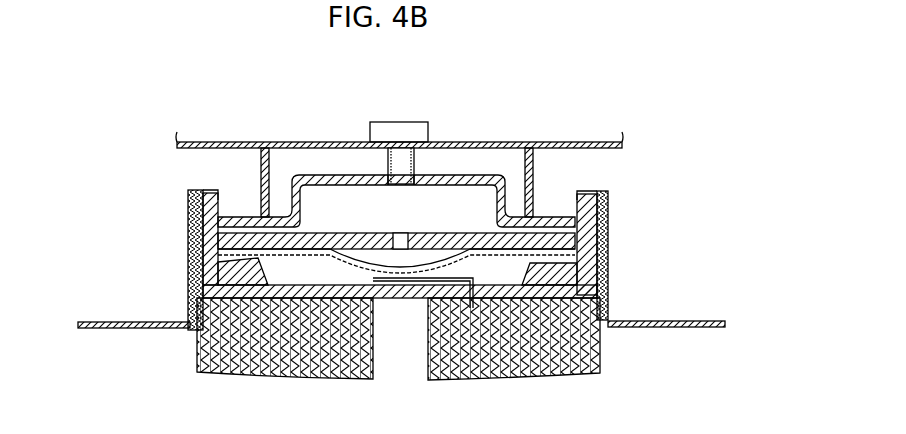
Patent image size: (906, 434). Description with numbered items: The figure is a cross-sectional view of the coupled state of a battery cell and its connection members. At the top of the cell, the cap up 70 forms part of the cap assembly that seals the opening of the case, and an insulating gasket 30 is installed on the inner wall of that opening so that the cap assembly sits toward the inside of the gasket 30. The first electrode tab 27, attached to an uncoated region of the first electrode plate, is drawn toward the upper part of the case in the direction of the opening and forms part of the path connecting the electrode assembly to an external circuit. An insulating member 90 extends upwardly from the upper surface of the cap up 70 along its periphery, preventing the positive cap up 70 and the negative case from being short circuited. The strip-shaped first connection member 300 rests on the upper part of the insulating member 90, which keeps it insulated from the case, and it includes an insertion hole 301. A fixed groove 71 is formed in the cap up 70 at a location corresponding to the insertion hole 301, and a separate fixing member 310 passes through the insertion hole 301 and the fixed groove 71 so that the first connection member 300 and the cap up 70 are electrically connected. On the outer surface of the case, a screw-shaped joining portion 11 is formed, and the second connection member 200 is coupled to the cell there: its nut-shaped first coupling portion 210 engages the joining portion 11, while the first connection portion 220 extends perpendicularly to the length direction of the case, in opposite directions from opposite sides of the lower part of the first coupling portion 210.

The first connection member 300 is at (566, 142).
The fixing member 310 is at (398, 132).
The insertion hole 301 is at (432, 146).
The insulating member 90 is at (262, 168).
The cap up 70 is at (322, 177).
The fixed groove 71 is at (388, 165).
The insulating gasket 30 is at (606, 200).
The joining portion 11 is at (608, 222).
The first electrode tab 27 is at (608, 260).
The second connection member 200 is at (459, 317).
The first coupling portion 210 is at (608, 268).
The first connection portion 220 is at (436, 333).